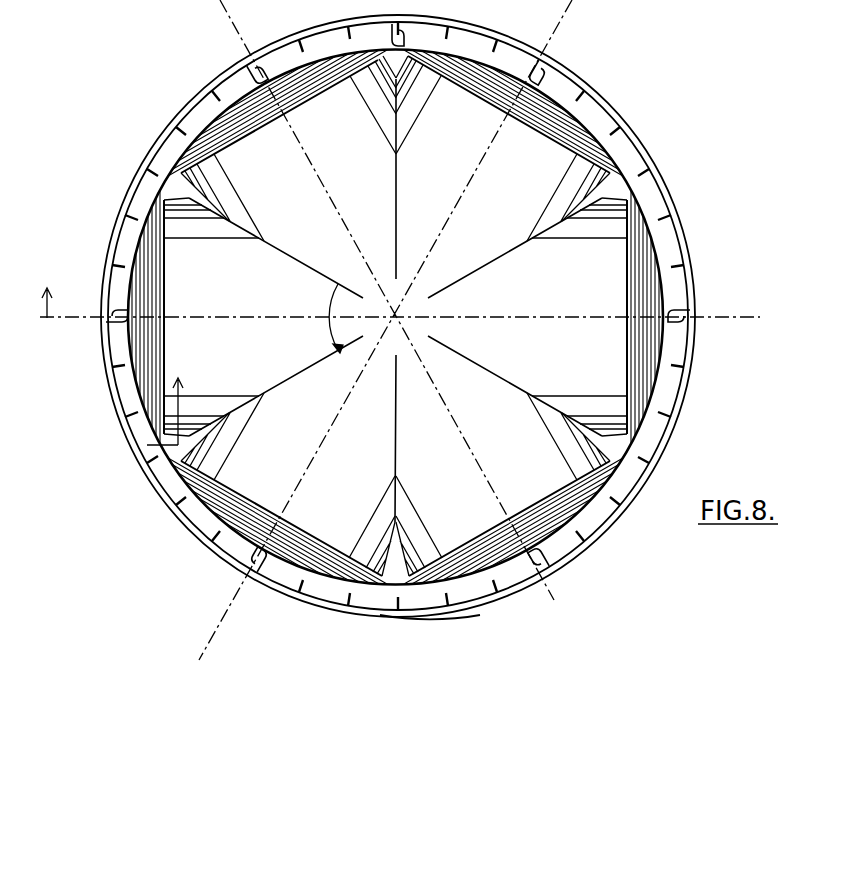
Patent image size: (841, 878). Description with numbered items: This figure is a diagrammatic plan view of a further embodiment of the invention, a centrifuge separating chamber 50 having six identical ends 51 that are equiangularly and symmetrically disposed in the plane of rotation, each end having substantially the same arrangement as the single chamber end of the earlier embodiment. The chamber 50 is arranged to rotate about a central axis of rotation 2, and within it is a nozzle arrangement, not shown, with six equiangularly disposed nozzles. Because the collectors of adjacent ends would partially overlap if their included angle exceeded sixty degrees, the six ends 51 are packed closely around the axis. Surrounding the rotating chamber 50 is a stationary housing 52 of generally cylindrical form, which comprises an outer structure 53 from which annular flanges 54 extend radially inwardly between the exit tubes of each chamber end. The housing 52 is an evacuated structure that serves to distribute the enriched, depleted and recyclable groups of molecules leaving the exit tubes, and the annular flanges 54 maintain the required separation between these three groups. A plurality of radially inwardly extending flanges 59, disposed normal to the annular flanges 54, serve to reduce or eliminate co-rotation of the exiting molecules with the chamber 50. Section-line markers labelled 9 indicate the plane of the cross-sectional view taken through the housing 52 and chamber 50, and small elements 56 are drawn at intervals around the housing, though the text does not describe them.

The axis of rotation 2 is at (399, 316).
The section line 9- 9 is at (112, 351).
The chamber 50 is at (448, 262).
The ends 51 is at (326, 176).
The stationary housing 52 is at (676, 298).
The outer structure 53 is at (683, 248).
The annular flanges 54 is at (630, 485).
The retaining clips 56 is at (261, 62).
The radially inwardly extending flanges 59 is at (431, 613).